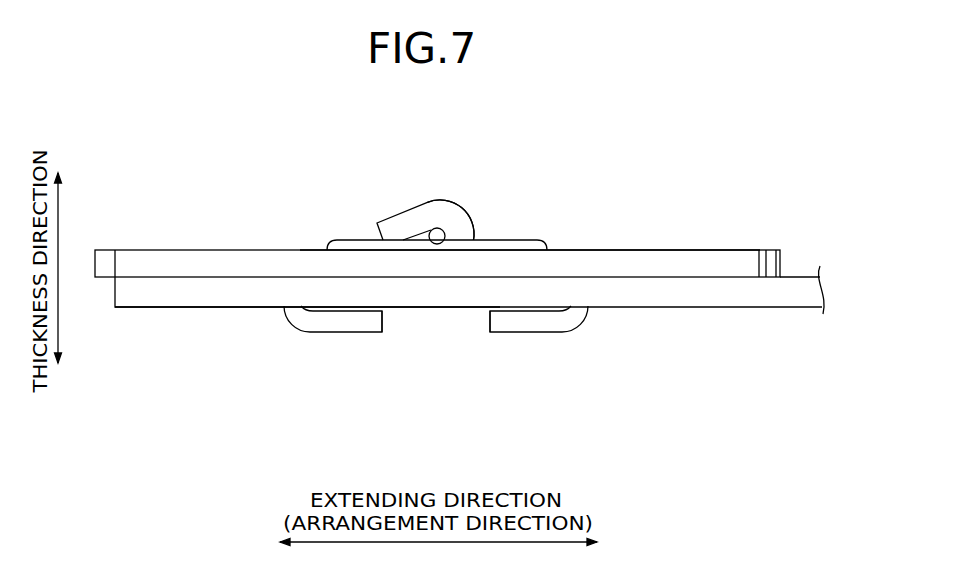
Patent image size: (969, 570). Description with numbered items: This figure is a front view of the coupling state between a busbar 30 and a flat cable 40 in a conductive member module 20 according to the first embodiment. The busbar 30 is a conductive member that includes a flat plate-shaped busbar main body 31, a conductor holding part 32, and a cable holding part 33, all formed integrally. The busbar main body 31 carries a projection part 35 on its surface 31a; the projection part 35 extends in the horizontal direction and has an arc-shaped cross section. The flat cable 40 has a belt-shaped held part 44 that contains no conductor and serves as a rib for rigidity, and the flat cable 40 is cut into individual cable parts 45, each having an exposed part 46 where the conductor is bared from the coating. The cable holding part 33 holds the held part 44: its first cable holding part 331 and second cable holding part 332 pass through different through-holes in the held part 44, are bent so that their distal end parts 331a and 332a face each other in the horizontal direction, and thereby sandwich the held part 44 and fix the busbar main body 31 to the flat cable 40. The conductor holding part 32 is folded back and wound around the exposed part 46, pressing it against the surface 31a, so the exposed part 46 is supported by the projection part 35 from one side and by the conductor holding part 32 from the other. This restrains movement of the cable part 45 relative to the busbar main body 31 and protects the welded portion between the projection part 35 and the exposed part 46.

The conductive member module 20 is at (147, 145).
The busbar 30 is at (197, 223).
The busbar main body 31 is at (268, 248).
The surface of the busbar main body 31a is at (632, 250).
The conductor holding part 32 is at (413, 205).
The cable holding part 33 is at (548, 441).
The first cable holding part 331 is at (518, 340).
The distal end part of the first cable holding part 331a is at (491, 319).
The second cable holding part 332 is at (337, 338).
The distal end part of the second cable holding part 332a is at (383, 319).
The projection part 35 is at (510, 238).
The flat cable 40 is at (795, 273).
The held part 44 is at (217, 309).
The cable part 45 is at (442, 224).
The exposed part 46 is at (440, 236).